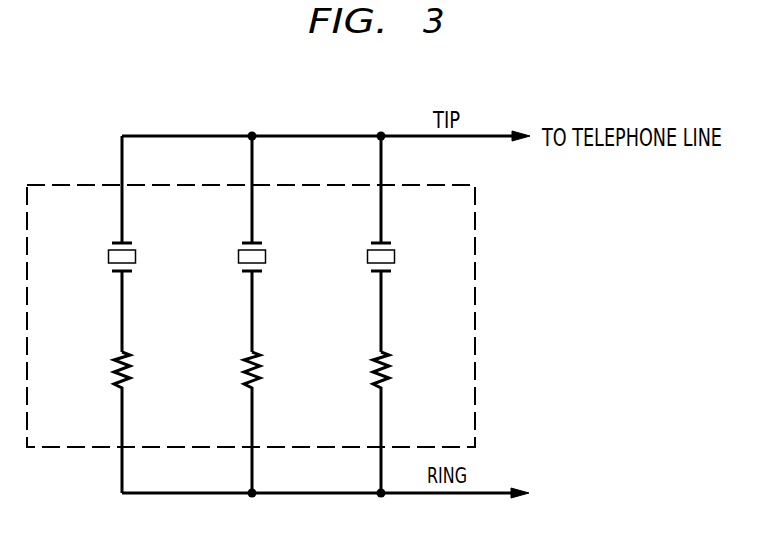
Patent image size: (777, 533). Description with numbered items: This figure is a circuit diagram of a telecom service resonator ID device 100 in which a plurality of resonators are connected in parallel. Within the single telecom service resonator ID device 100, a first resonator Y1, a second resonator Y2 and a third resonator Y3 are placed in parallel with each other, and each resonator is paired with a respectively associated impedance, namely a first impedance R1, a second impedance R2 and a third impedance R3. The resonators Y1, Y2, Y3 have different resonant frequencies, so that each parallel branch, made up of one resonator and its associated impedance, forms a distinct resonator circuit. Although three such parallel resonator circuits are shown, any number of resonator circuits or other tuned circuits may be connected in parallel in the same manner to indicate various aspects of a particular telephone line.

The protection circuit 100 is at (475, 300).
The first varistor / surge suppressor Y1 is at (136, 258).
The second varistor / surge suppressor Y2 is at (266, 258).
The third varistor / surge suppressor Y3 is at (395, 258).
The first resistor R1 is at (132, 376).
The second resistor R2 is at (262, 376).
The third resistor R3 is at (391, 376).